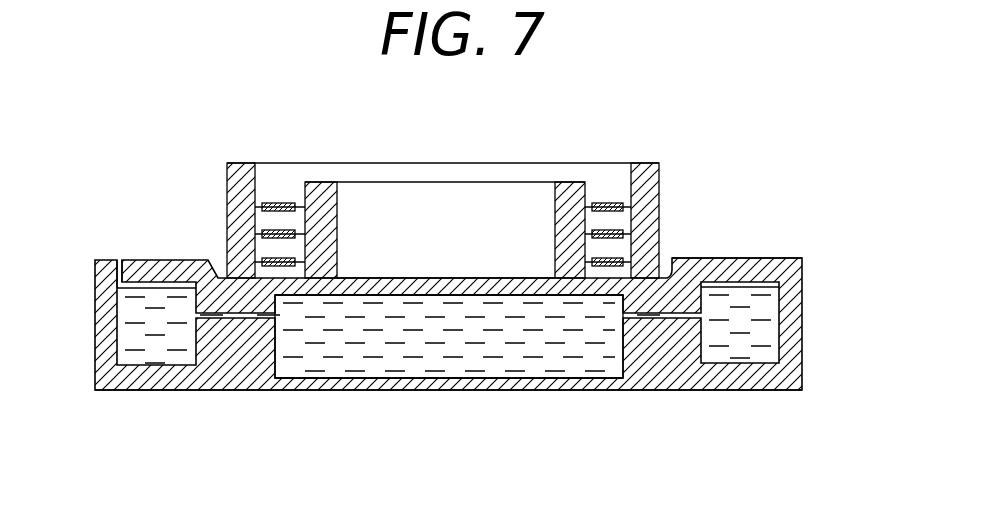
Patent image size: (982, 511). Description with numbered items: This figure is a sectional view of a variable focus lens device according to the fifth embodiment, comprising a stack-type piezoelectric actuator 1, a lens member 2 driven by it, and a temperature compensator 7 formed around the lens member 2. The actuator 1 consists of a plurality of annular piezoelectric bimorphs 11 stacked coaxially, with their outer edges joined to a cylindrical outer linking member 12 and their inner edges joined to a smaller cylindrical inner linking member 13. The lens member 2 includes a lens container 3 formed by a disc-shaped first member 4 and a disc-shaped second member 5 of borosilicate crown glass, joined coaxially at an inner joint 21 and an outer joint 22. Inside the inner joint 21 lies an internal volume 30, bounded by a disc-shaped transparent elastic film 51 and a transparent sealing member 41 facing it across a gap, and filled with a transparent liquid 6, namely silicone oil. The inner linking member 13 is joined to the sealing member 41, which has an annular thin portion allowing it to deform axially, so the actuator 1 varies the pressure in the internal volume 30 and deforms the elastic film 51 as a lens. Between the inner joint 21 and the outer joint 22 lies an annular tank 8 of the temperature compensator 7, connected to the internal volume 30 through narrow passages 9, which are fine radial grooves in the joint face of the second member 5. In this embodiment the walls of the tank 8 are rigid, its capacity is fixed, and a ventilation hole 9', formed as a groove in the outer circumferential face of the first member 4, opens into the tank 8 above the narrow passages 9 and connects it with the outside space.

The stack-type piezoelectric actuator 1 is at (678, 183).
The lens member 2 is at (500, 403).
The lens container 3 is at (390, 390).
The first member 4 is at (802, 290).
The second member 5 is at (802, 355).
The transparent liquid 6 is at (568, 350).
The temperature compensator 7 is at (248, 475).
The tank 8 is at (148, 405).
The narrow passages 9 is at (438, 396).
The ventilation hole 9' is at (126, 216).
The piezoelectric bimorphs 11 is at (277, 204).
The outer linking member 12 is at (227, 193).
The inner linking member 13 is at (337, 218).
The inner joint 21 is at (688, 228).
The outer joint 22 is at (790, 245).
The internal volume 30 is at (343, 358).
The transparent sealing member 41 is at (467, 295).
The transparent elastic film 51 is at (452, 380).